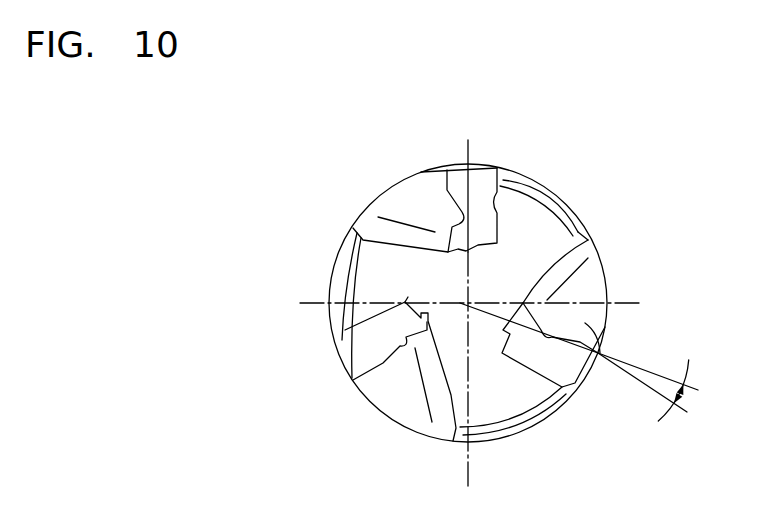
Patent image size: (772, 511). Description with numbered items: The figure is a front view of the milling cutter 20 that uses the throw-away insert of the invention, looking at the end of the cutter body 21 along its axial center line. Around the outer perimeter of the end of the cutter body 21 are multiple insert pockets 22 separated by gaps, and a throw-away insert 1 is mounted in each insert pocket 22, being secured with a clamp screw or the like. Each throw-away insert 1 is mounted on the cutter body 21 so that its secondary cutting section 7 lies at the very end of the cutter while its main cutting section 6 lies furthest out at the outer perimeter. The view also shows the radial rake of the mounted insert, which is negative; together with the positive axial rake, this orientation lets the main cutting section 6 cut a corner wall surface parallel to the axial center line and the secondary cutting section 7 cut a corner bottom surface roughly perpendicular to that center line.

The throw-away insert 1 is at (455, 161).
The main cutting section 6 is at (598, 353).
The secondary cutting section 7 is at (585, 336).
The milling cutter 20 is at (588, 193).
The cutter body 21 is at (497, 402).
The insert pocket 22 is at (503, 178).